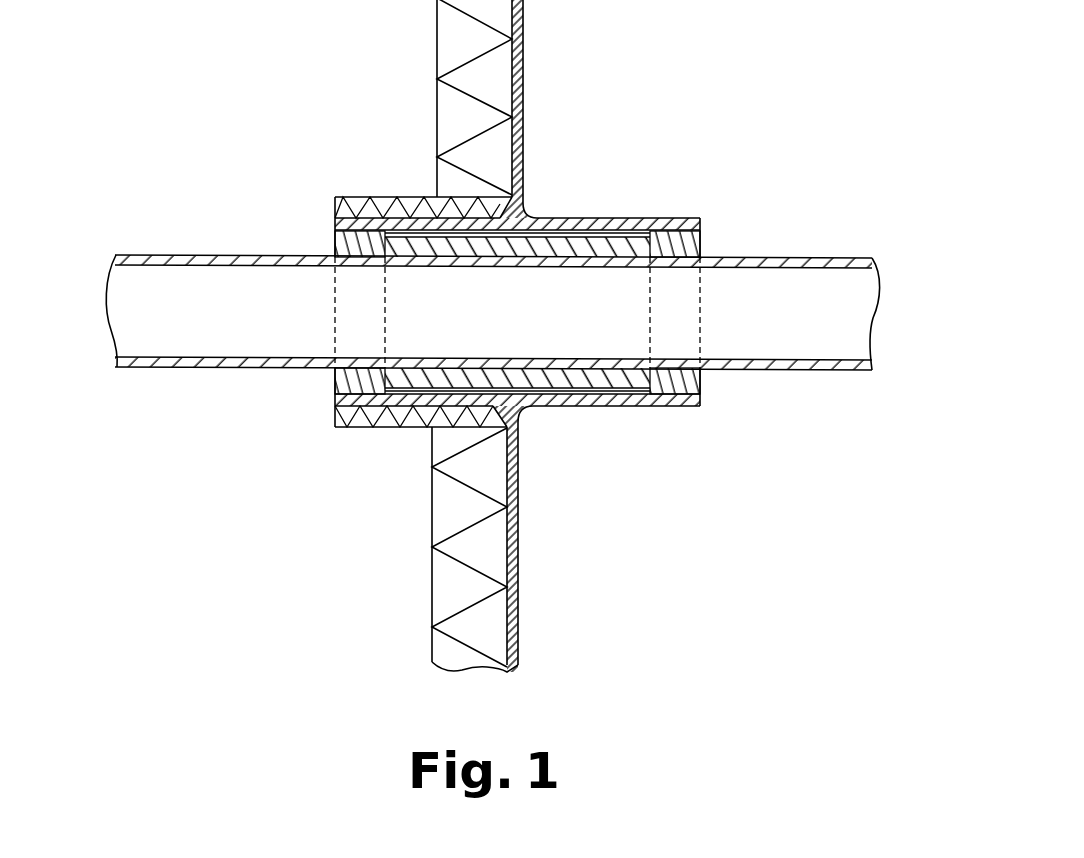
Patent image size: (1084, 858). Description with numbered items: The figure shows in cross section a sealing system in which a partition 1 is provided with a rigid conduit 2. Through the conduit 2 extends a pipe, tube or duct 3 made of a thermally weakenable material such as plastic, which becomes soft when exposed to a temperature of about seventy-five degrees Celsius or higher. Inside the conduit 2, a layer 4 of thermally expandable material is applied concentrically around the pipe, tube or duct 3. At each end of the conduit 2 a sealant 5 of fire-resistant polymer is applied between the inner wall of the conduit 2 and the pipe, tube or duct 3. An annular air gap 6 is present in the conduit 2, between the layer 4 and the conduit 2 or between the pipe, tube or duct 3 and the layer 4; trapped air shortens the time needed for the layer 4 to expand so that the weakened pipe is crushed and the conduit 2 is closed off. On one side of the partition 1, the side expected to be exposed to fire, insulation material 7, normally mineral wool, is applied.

The partition 1 is at (523, 87).
The rigid conduit 2 is at (652, 218).
The pipe, tube or duct 3 is at (257, 256).
The layer of thermally expandable material 4 is at (568, 373).
The sealant 5 is at (334, 380).
The annular air gap 6 is at (553, 230).
The insulation material 7 is at (448, 64).